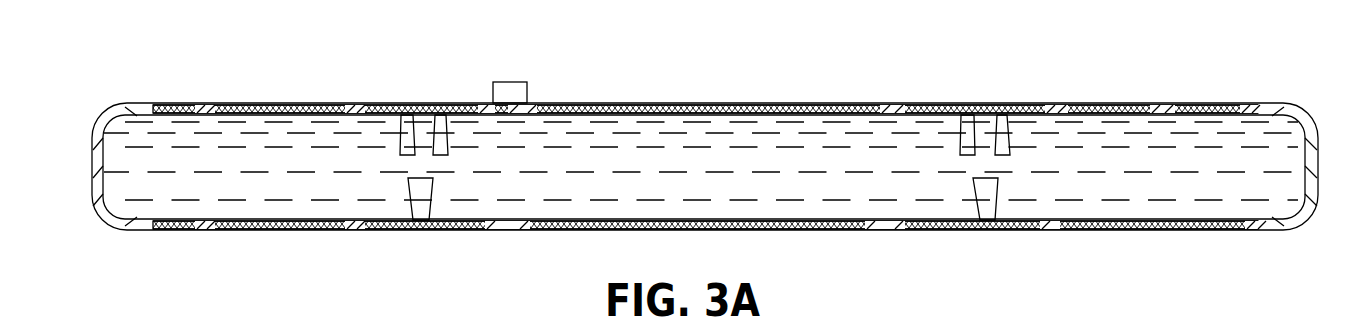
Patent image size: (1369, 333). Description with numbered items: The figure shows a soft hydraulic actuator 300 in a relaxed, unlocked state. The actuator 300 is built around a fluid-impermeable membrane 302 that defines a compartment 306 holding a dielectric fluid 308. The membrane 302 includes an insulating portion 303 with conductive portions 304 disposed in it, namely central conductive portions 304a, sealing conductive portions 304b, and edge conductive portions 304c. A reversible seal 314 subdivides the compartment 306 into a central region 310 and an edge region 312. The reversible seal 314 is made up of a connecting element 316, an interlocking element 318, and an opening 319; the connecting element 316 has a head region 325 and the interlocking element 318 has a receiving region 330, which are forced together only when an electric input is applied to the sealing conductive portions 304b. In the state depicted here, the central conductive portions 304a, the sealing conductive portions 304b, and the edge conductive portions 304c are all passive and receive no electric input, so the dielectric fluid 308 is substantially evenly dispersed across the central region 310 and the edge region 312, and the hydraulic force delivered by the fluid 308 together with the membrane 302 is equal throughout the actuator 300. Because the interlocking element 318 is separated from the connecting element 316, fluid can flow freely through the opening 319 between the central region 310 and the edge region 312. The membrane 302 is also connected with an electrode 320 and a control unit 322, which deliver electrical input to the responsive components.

The actuator 300 is at (972, 76).
The fluid-impermeable membrane 302 is at (1314, 150).
The insulating portion 303 is at (900, 226).
The conductive portions 304 is at (1217, 328).
The central conductive portions 304a is at (762, 110).
The sealing conductive portions 304b is at (998, 108).
The edge conductive portions 304c is at (1155, 104).
The compartment 306 is at (358, 128).
The dielectric fluid 308 is at (897, 140).
The central region 310 is at (577, 122).
The edge region 312 is at (327, 145).
The reversible seal 314 is at (454, 176).
The connecting element 316 is at (420, 207).
The interlocking element 318 is at (443, 122).
The opening 319 is at (413, 167).
The electrode 320 is at (480, 110).
The control unit 322 is at (520, 88).
The head region 325 is at (995, 190).
The receiving region 330 is at (1008, 135).